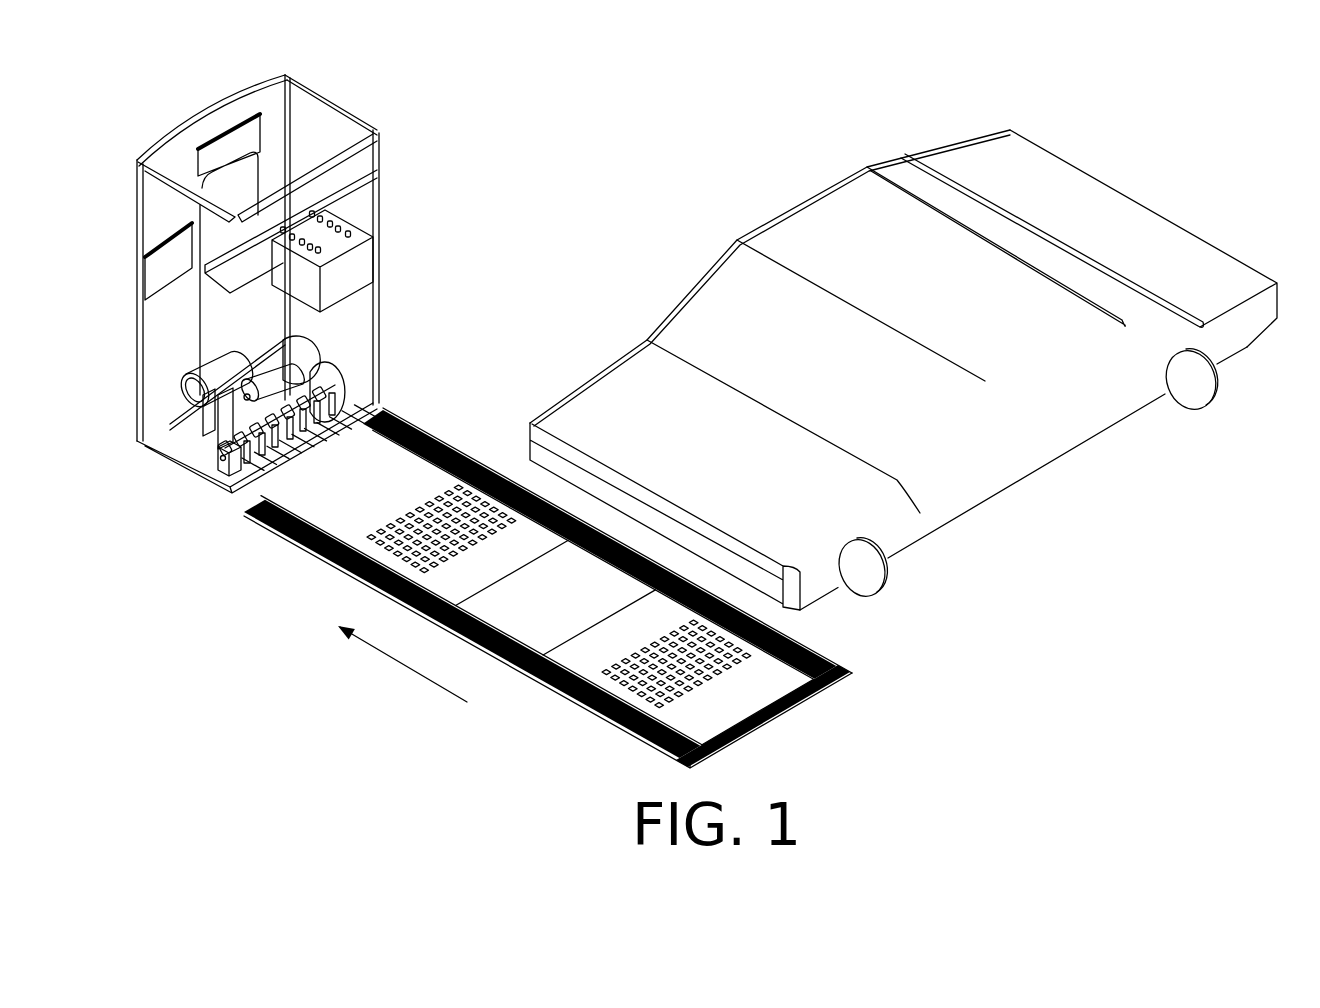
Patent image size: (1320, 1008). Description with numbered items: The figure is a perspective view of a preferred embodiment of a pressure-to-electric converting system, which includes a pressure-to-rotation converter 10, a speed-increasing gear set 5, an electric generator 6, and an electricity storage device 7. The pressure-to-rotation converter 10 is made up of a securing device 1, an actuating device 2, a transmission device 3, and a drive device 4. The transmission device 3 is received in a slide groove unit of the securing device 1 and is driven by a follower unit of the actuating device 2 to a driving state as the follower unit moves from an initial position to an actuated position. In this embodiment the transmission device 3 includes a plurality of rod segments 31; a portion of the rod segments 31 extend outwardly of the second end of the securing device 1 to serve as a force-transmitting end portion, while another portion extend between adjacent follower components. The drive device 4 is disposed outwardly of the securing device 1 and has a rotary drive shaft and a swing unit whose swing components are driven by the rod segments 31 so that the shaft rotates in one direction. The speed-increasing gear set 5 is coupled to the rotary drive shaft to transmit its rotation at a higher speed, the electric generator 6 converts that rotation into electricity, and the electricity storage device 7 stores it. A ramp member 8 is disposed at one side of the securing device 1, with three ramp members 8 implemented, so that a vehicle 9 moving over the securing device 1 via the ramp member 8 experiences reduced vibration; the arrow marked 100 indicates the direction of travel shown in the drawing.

The securing device 1 is at (497, 607).
The actuating device 2 is at (343, 560).
The transmission device 3 is at (288, 463).
The rod segments 31 is at (266, 478).
The drive device 4 is at (243, 470).
The speed-increasing gear set 5 is at (338, 352).
The electric generator 6 is at (186, 396).
The electricity storage device 7 is at (341, 224).
The ramp member 8 is at (438, 626).
The vehicle 9 is at (676, 308).
The pressure-to-rotation converter 10 is at (406, 405).
The transport direction 100 is at (403, 664).